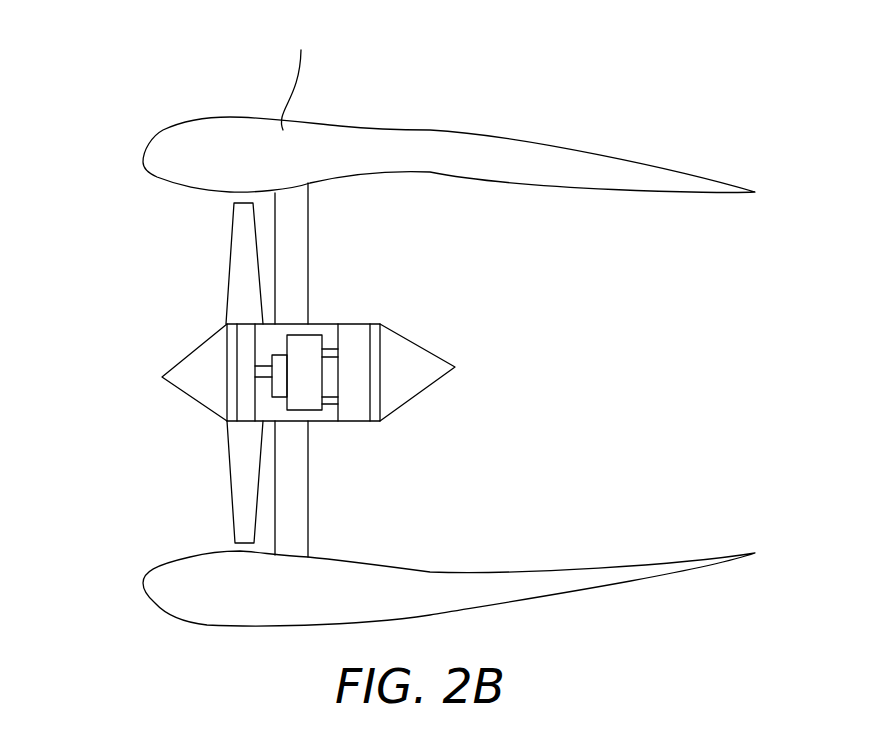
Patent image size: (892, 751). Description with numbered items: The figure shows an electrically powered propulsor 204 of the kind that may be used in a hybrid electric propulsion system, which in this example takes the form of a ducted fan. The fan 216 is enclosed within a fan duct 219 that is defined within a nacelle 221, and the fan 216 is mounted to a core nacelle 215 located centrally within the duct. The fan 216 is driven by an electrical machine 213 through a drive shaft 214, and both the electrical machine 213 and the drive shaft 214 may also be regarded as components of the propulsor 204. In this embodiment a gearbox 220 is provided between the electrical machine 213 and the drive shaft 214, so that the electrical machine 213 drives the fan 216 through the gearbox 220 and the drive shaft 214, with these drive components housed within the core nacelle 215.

The propulsor 204 is at (147, 277).
The electrical machine 213 is at (310, 393).
The drive shaft 214 is at (267, 362).
The core nacelle 215 is at (418, 343).
The fan 216 is at (240, 470).
The fan duct 219 is at (308, 221).
The gearbox 220 is at (273, 397).
The nacelle 221 is at (449, 326).